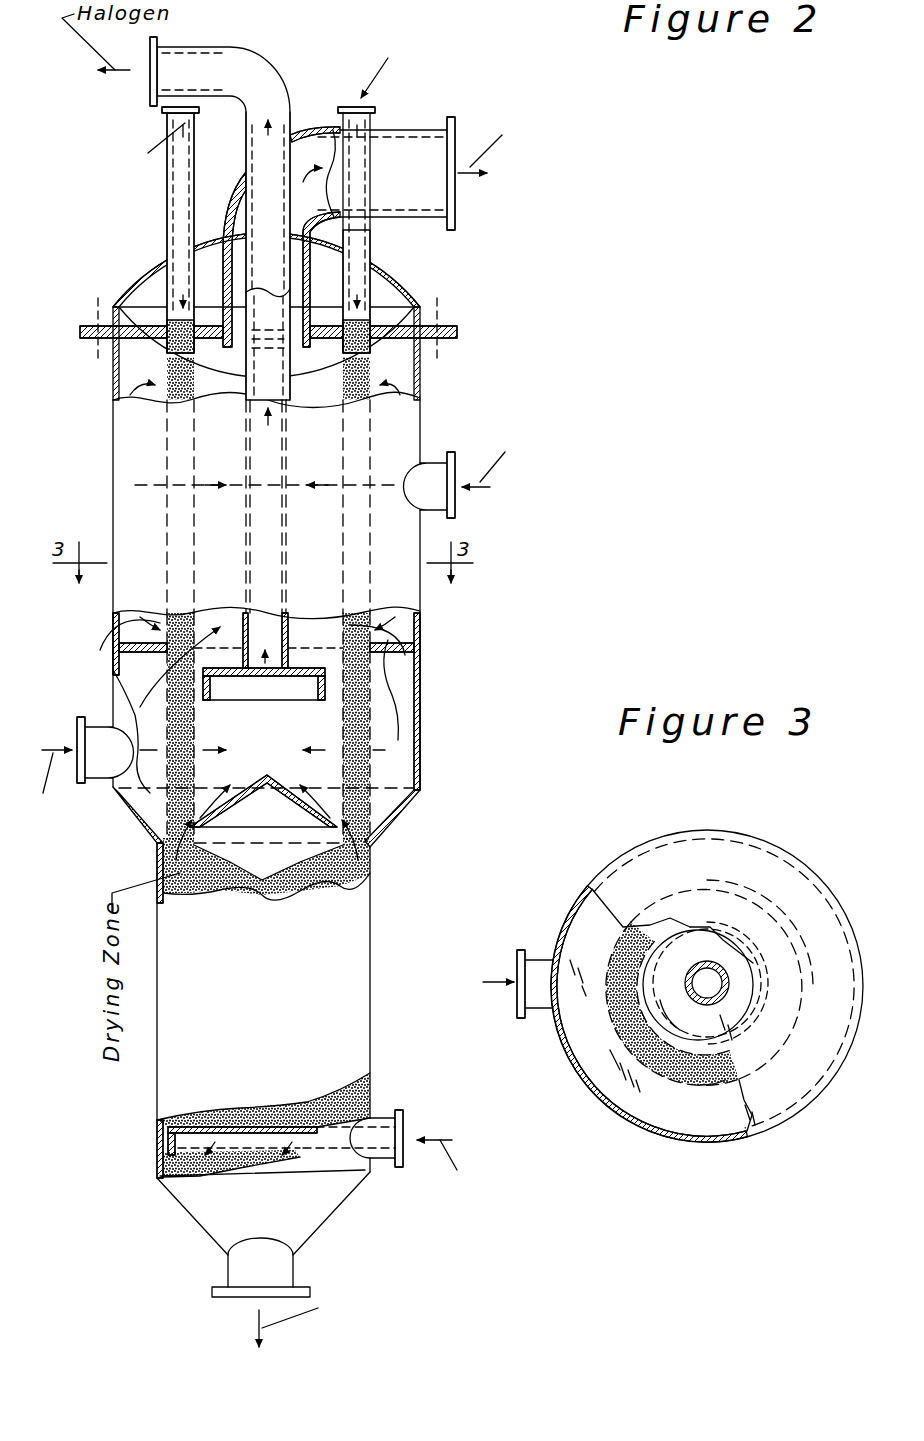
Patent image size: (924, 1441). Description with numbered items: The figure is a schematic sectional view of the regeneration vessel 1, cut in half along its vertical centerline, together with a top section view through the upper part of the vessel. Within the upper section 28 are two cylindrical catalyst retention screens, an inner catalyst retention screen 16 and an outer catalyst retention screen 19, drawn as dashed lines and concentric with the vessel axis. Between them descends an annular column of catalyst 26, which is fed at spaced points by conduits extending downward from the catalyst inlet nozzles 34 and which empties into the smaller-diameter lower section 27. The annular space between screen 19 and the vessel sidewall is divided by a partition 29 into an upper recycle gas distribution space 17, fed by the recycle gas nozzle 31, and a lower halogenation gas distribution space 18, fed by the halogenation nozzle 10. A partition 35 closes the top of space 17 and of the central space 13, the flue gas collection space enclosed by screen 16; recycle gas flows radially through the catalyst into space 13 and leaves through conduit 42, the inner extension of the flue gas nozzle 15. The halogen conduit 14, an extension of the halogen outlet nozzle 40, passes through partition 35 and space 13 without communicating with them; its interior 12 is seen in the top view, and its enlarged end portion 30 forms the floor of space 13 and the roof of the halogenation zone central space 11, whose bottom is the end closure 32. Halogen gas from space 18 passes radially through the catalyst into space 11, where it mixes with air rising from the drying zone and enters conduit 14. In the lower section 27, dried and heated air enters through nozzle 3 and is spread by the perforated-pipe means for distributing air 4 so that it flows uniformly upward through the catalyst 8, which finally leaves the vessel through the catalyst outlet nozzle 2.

In FIG. 2, the regeneration vessel 1 is at (430, 386).
In FIG. 2, the catalyst outlet nozzle 2 is at (228, 1265).
In FIG. 2, the air nozzle 3 is at (403, 1113).
In FIG. 2, the means for distributing air 4 is at (247, 1122).
In FIG. 2, the catalyst 8 is at (193, 880).
In FIG. 2, the halogenation nozzle 10 is at (100, 725).
In FIG. 3, the halogenation nozzle 10 is at (538, 958).
In FIG. 2, the halogenation zone central space 11 is at (273, 749).
In FIG. 2, the interior of conduit 14 12 is at (280, 374).
In FIG. 3, the interior of conduit 14 12 is at (715, 980).
In FIG. 2, the central space 13 is at (228, 394).
In FIG. 3, the central space 13 is at (730, 1013).
In FIG. 2, the halogen conduit 14 is at (290, 333).
In FIG. 3, the halogen conduit 14 is at (712, 978).
In FIG. 2, the flue gas nozzle 15 is at (455, 230).
In FIG. 2, the inner catalyst retention screen 16 is at (342, 468).
In FIG. 3, the inner catalyst retention screen 16 is at (638, 980).
In FIG. 2, the recycle gas distribution space 17 is at (133, 635).
In FIG. 3, the recycle gas distribution space 17 is at (600, 1032).
In FIG. 2, the halogenation gas distribution space 18 is at (112, 660).
In FIG. 2, the outer catalyst retention screen 19 is at (168, 458).
In FIG. 3, the outer catalyst retention screen 19 is at (707, 1087).
In FIG. 2, the annular column of catalyst 26 is at (183, 387).
In FIG. 3, the annular column of catalyst 26 is at (680, 1070).
In FIG. 2, the lower section 27 is at (373, 917).
In FIG. 2, the upper section 28 is at (420, 690).
In FIG. 3, the upper section 28 is at (690, 828).
In FIG. 2, the partition 29 is at (388, 643).
In FIG. 3, the partition 29 is at (615, 1078).
In FIG. 2, the end portion of conduit 14 30 is at (253, 702).
In FIG. 3, the end portion of conduit 14 30 is at (662, 1022).
In FIG. 2, the recycle gas nozzle 31 is at (425, 462).
In FIG. 2, the end closure 32 is at (270, 780).
In FIG. 2, the catalyst inlet nozzles 34 is at (380, 110).
In FIG. 2, the partition 35 is at (148, 328).
In FIG. 2, the halogen outlet nozzle 40 is at (268, 62).
In FIG. 2, the flue gas conduit 42 is at (312, 272).